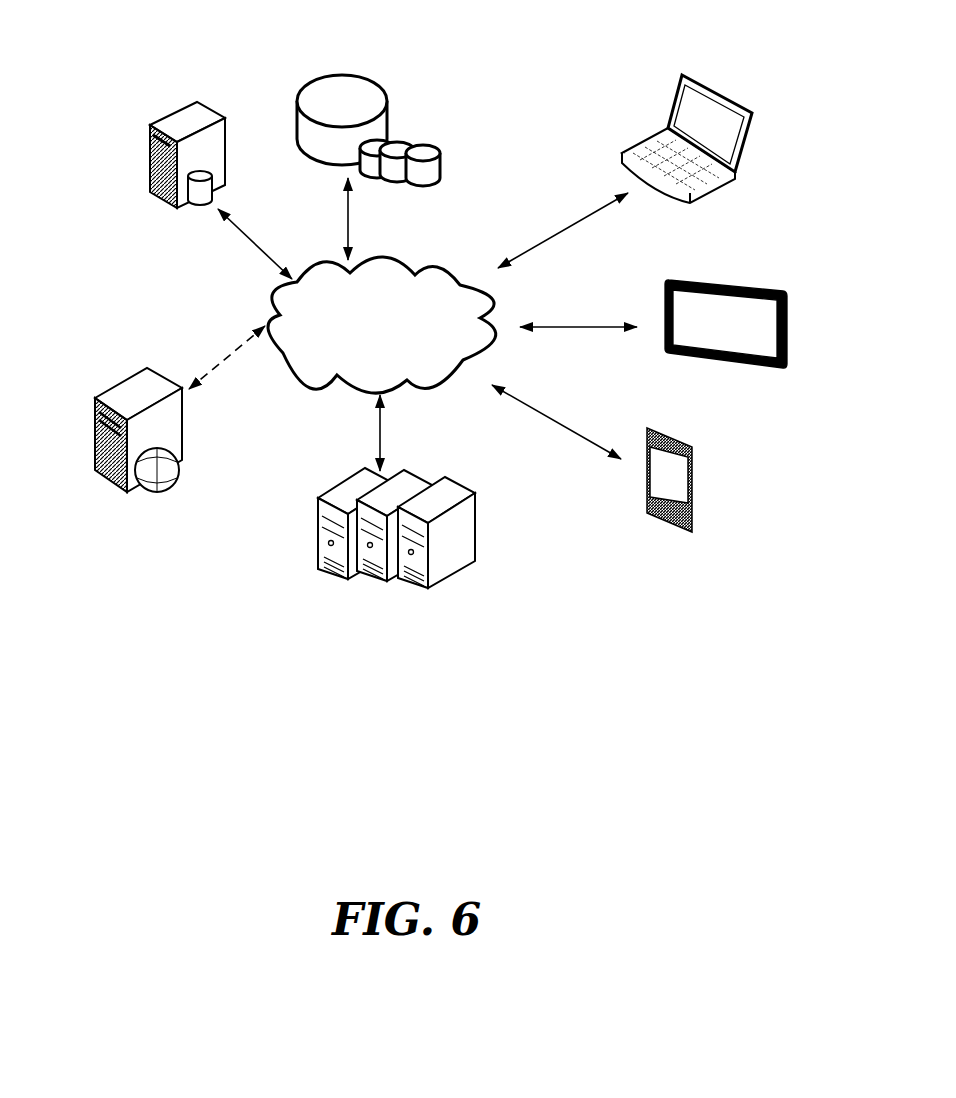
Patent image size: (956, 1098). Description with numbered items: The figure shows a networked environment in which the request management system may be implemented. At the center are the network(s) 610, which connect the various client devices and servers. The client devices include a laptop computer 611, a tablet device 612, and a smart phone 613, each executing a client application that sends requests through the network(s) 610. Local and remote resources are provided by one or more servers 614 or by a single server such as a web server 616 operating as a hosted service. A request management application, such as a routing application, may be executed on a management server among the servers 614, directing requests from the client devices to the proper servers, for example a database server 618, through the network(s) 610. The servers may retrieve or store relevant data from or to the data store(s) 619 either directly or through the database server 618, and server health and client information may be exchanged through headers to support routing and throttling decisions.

The network(s) 610 is at (386, 247).
The laptop computer 611 is at (724, 75).
The tablet device 612 is at (759, 261).
The smart phone 613 is at (700, 445).
The servers 614 is at (346, 476).
The web server 616 is at (117, 376).
The database server 618 is at (188, 217).
The data store(s) 619 is at (358, 53).